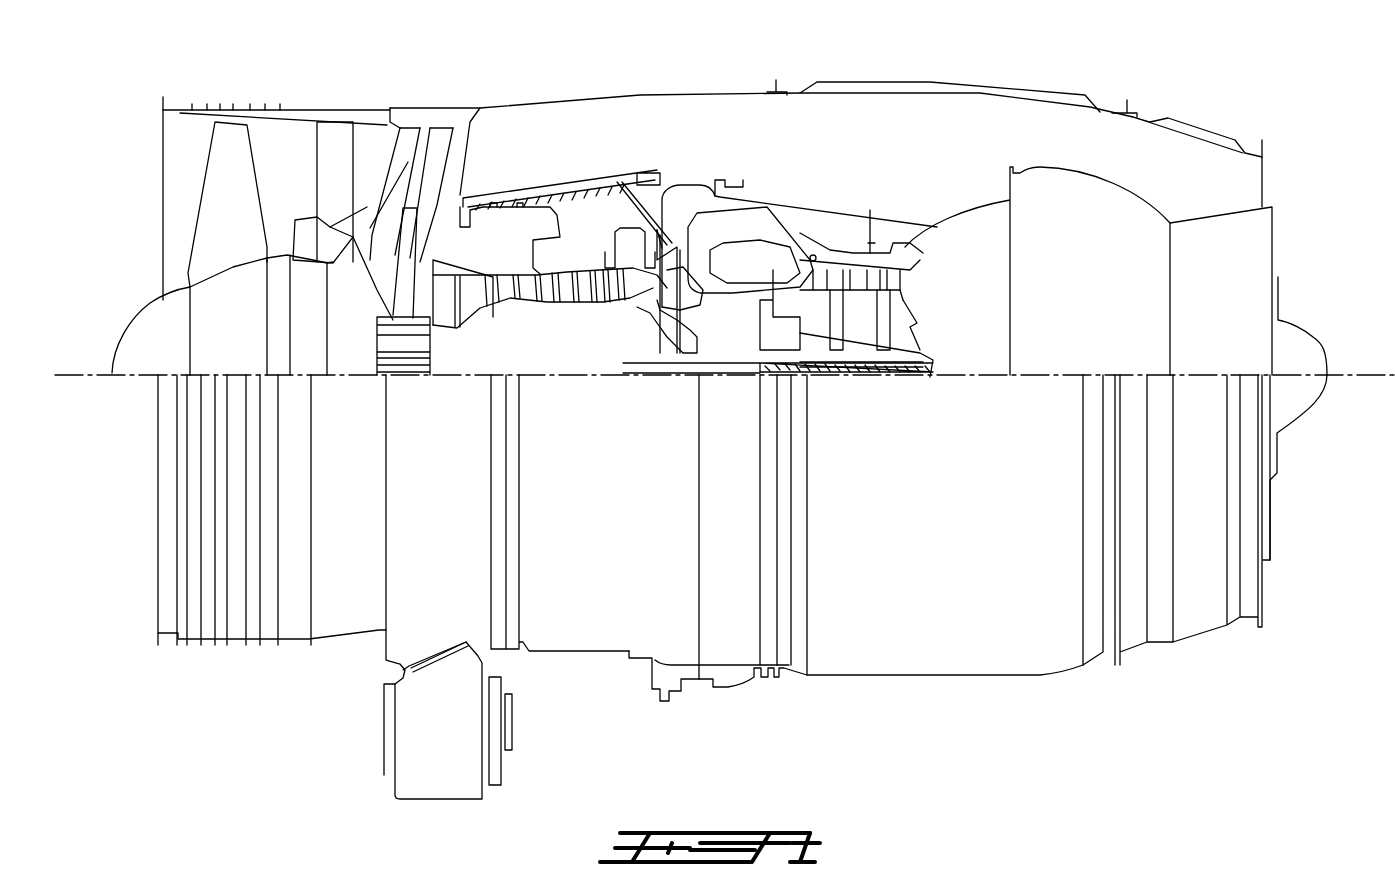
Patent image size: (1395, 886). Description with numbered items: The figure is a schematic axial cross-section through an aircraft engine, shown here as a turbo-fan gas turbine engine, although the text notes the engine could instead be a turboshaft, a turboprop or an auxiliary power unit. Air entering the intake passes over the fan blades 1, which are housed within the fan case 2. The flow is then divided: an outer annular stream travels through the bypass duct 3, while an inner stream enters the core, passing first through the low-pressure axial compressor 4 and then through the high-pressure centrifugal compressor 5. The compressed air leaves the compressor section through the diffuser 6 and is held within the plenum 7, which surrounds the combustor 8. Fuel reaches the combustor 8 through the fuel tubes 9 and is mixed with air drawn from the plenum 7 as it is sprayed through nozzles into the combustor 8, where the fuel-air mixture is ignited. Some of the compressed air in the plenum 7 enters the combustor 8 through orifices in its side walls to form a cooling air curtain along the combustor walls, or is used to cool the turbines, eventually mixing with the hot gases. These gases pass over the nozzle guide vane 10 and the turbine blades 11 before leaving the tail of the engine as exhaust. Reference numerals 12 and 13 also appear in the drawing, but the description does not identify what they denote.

The fan blades 1 is at (238, 222).
The fan case 2 is at (292, 108).
The bypass duct 3 is at (572, 157).
The low-pressure axial compressor 4 is at (483, 312).
The high-pressure centrifugal compressor 5 is at (637, 308).
The diffuser 6 is at (693, 203).
The plenum 7 is at (775, 235).
The combustor 8 is at (752, 274).
The fuel tubes 9 is at (770, 240).
The nozzle guide vane 10 is at (816, 256).
The turbine blades 11 is at (843, 247).
The shaft 12 is at (803, 320).
The low pressure shaft 13 is at (831, 370).